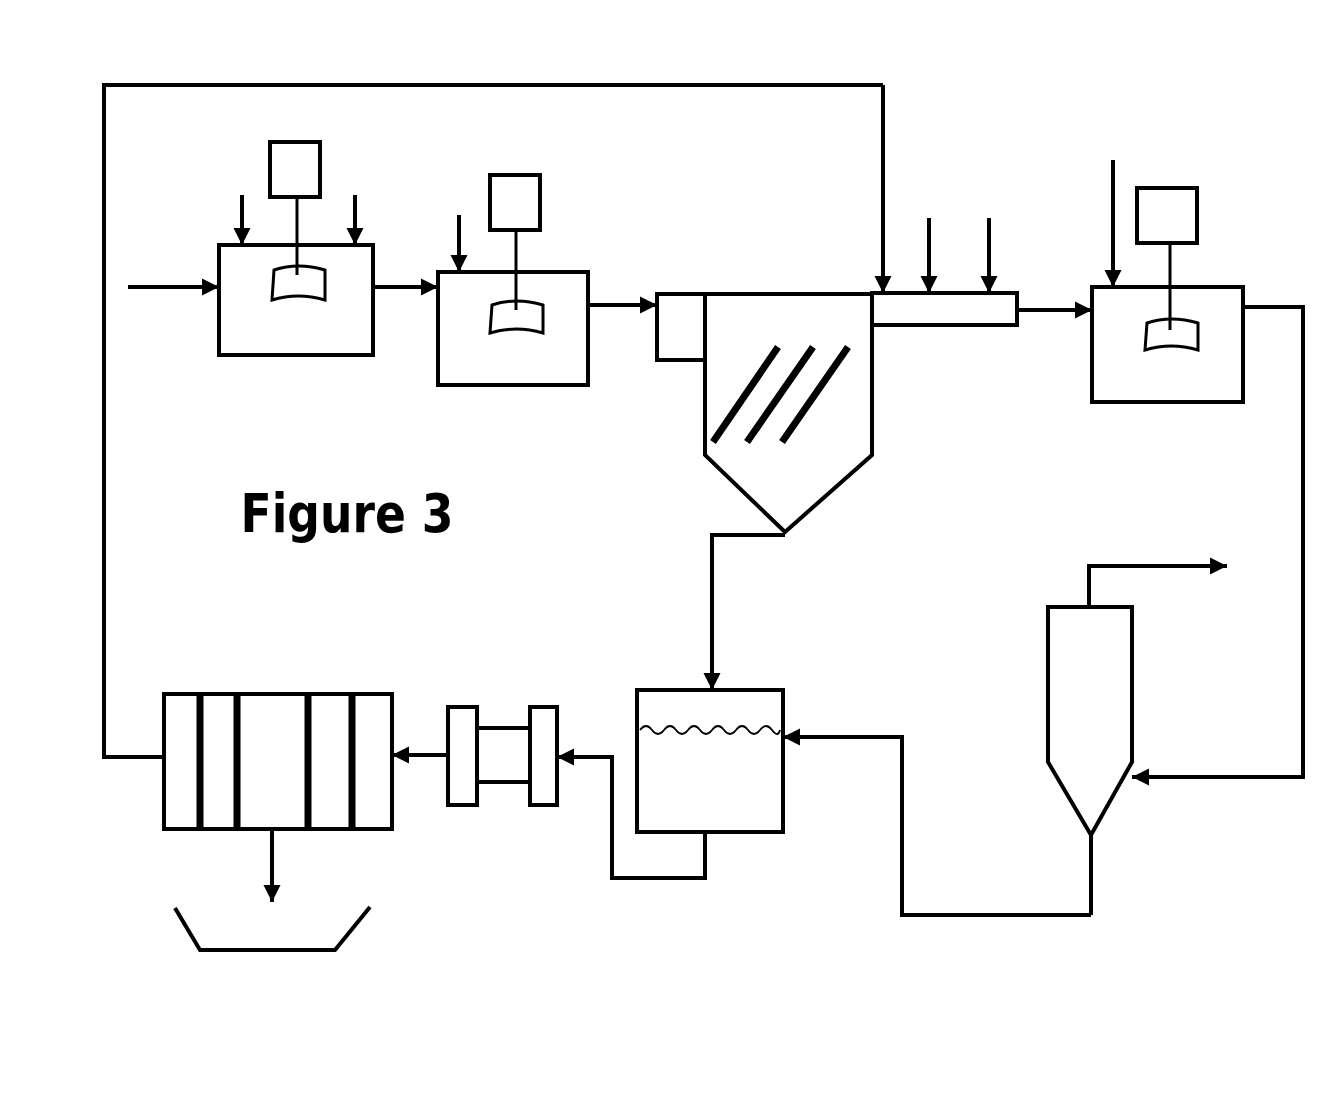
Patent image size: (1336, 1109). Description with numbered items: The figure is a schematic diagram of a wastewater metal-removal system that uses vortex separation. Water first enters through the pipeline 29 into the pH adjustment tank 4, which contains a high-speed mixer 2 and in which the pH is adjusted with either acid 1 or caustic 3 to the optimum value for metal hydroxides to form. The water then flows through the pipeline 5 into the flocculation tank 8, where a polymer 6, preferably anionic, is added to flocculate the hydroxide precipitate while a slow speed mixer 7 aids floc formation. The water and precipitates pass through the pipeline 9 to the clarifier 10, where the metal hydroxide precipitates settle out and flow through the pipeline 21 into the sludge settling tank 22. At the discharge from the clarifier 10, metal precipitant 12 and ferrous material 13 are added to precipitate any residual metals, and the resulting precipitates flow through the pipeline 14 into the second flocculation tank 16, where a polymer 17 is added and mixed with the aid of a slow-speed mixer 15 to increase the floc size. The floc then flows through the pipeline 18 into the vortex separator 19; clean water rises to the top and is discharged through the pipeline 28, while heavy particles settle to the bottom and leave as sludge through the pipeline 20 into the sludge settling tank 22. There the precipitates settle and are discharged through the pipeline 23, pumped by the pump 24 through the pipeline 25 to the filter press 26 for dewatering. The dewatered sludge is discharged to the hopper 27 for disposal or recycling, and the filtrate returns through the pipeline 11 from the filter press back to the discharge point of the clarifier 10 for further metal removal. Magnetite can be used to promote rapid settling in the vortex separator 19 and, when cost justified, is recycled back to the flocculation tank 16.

The acid 1 is at (242, 202).
The high-speed mixer 2 is at (295, 208).
The caustic 3 is at (353, 202).
The pH adjustment tank 4 is at (296, 300).
The pipeline 5 is at (393, 296).
The polymer 6 is at (459, 225).
The slow speed mixer 7 is at (515, 242).
The flocculation tank 8 is at (513, 328).
The pipeline 9 is at (618, 297).
The clarifier 10 is at (764, 413).
The pipeline 11 is at (729, 92).
The metal precipitant 12 is at (944, 253).
The ferrous material 13 is at (989, 237).
The pipeline 14 is at (1050, 318).
The slow-speed mixer 15 is at (1167, 259).
The flocculation tank 16 is at (1167, 344).
The polymer 17 is at (1113, 202).
The pipeline 18 is at (1236, 785).
The vortex separator 19 is at (1090, 761).
The pipeline 20 is at (908, 870).
The pipeline 21 is at (720, 587).
The sludge settling tank 22 is at (710, 761).
The pipeline 23 is at (603, 823).
The pump 24 is at (502, 756).
The pipeline 25 is at (423, 747).
The filter press 26 is at (278, 761).
The hopper 27 is at (317, 933).
The pipeline 28 is at (1179, 573).
The pipeline 29 is at (155, 292).